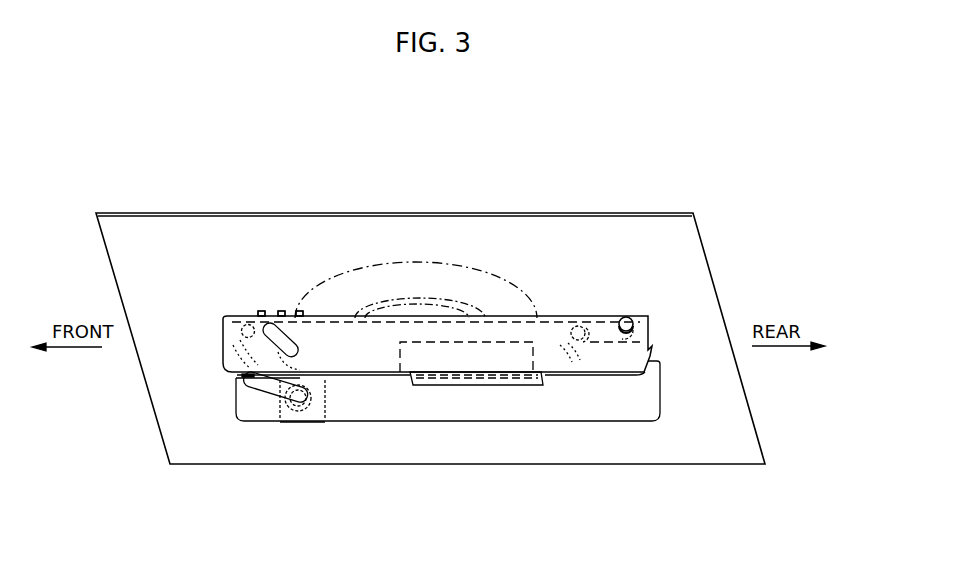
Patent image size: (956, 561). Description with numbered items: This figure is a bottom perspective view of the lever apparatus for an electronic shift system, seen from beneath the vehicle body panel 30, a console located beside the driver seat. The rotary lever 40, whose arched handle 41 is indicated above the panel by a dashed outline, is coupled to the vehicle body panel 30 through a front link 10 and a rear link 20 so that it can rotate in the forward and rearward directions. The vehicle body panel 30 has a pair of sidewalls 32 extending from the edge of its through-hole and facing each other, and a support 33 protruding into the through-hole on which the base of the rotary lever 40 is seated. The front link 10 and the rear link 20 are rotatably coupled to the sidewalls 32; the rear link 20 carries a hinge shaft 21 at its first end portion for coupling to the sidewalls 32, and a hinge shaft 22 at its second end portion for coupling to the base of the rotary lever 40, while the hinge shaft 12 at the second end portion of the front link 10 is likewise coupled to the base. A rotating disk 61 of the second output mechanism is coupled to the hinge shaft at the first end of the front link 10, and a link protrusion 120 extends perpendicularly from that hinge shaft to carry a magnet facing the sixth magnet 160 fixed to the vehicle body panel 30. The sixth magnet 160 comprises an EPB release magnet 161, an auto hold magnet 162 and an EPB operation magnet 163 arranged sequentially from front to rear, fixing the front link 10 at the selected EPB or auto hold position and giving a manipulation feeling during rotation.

The front link 10 is at (280, 383).
The hinge shaft 12 is at (243, 333).
The rear link 20 is at (613, 357).
The hinge shaft 21 is at (627, 318).
The hinge shaft 22 is at (578, 326).
The vehicle body panel 30 is at (658, 212).
The sidewalls 32 is at (360, 360).
The support 33 is at (508, 384).
The rotary lever 40 is at (428, 250).
The handle 41 is at (478, 288).
The rotating disk 61 is at (303, 403).
The link protrusion 120 is at (283, 343).
The sixth magnet 160 is at (238, 133).
The EPB release magnet 161 is at (262, 311).
The auto hold magnet 162 is at (282, 311).
The EPB operation magnet 163 is at (300, 311).